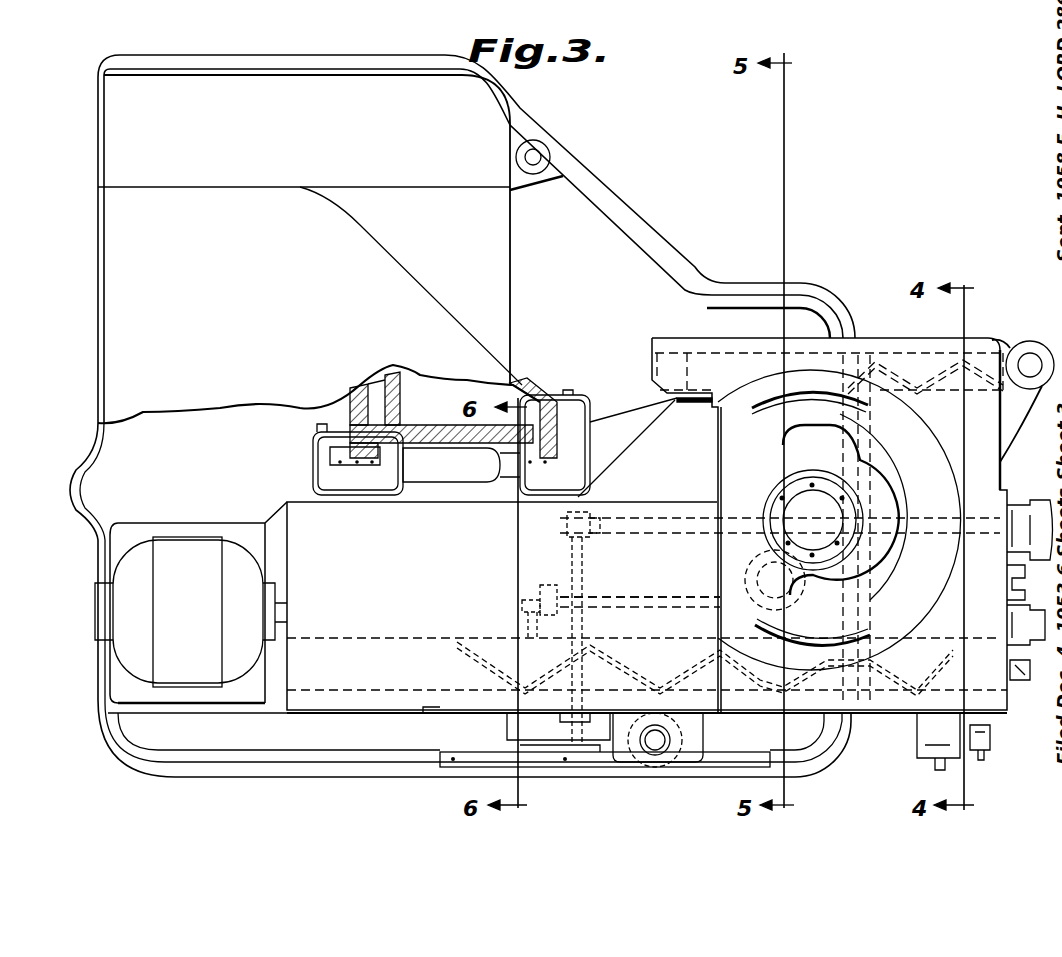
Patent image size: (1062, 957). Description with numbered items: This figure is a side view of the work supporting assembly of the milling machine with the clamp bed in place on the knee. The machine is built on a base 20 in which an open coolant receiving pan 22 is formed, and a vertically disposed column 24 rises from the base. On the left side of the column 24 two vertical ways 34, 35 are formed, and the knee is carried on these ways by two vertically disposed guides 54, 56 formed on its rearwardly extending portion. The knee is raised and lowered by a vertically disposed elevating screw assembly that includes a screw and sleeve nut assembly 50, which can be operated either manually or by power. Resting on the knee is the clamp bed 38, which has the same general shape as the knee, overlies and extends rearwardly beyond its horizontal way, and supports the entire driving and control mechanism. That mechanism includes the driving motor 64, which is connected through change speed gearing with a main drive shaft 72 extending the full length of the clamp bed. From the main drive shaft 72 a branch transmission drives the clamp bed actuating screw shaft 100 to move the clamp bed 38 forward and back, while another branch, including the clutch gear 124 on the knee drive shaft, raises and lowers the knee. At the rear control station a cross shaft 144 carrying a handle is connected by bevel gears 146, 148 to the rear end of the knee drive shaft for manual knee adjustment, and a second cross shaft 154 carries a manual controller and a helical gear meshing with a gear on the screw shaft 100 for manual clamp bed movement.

The base 20 is at (668, 252).
The coolant receiving pan 22 is at (667, 313).
The column 24 is at (118, 306).
The vertical way 34 is at (328, 452).
The vertical way 35 is at (538, 398).
The clamp bed 38 is at (457, 713).
The screw and sleeve nut assembly 50 is at (742, 582).
The vertical guide 54 is at (325, 483).
The vertical guide 56 is at (532, 478).
The driving motor 64 is at (137, 653).
The main drive shaft 72 is at (535, 528).
The clamp bed actuating screw shaft 100 is at (645, 535).
The clutch gear 124 is at (617, 600).
The cross shaft 144 is at (512, 652).
The bevel gear 146 is at (525, 608).
The bevel gear 148 is at (545, 590).
The cross shaft 154 is at (575, 566).